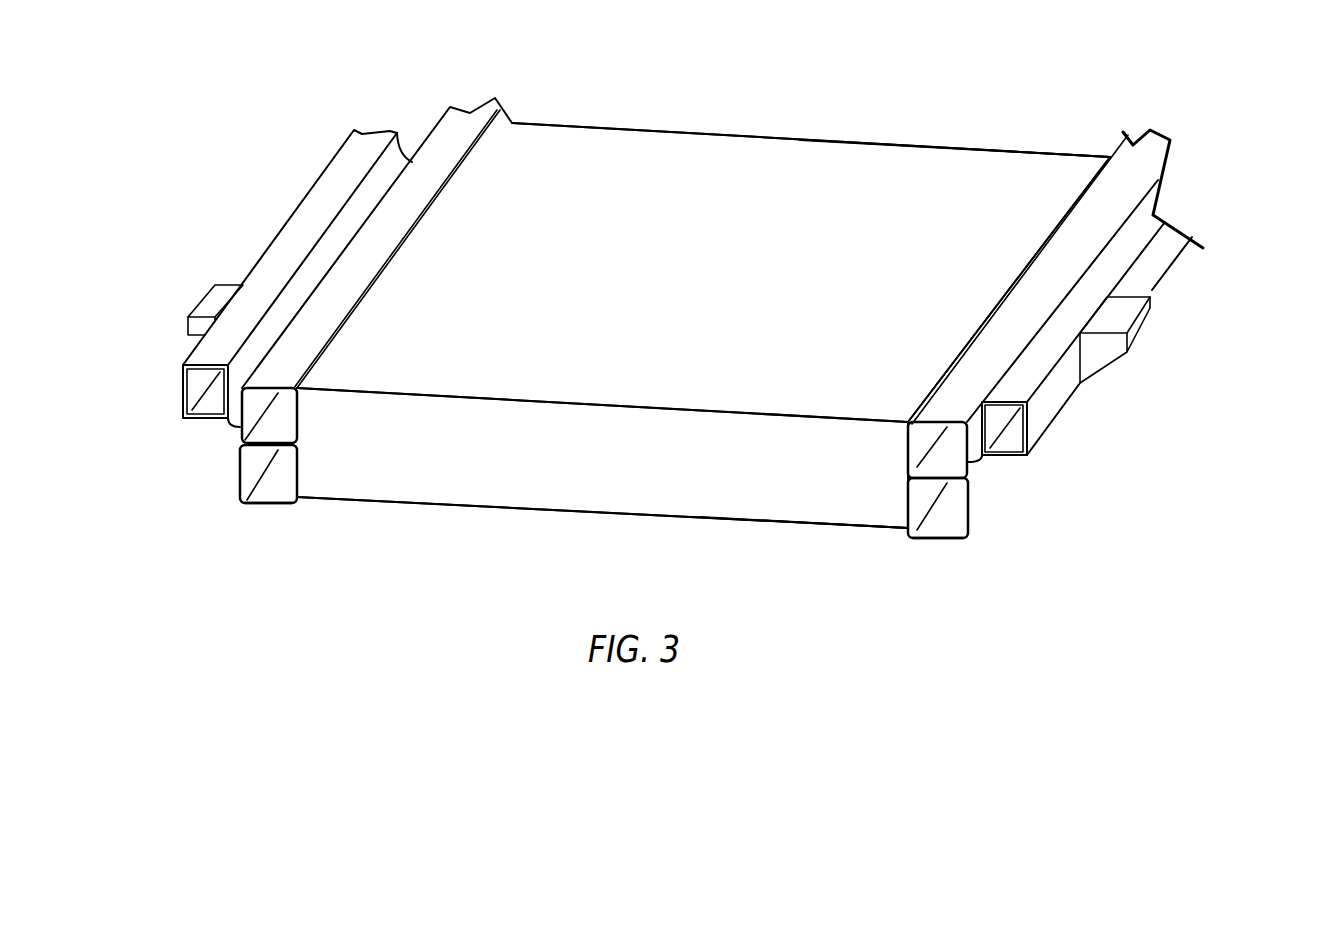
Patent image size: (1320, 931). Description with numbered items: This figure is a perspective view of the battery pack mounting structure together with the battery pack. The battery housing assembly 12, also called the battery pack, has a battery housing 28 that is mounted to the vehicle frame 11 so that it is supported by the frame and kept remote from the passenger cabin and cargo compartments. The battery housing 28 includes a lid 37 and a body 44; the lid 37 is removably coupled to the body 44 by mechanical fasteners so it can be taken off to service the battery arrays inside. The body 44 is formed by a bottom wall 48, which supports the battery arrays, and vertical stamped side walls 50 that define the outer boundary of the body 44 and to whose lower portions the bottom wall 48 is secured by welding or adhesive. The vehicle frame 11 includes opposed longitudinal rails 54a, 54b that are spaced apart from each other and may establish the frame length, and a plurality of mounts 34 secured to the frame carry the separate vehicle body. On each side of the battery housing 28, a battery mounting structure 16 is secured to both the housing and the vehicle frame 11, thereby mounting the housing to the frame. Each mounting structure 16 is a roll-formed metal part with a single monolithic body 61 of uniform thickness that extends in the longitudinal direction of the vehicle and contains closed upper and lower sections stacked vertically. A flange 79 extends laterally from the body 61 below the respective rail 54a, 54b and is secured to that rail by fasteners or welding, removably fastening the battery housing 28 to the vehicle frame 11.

The vehicle frame 11 is at (1138, 206).
The battery housing assembly 12 is at (724, 122).
The battery mounting structure 16 is at (264, 505).
The battery housing 28 is at (611, 128).
The mount 34 is at (202, 298).
The lid 37 is at (930, 185).
The body 44 is at (512, 464).
The bottom wall 48 is at (863, 535).
The side wall 50 is at (782, 462).
The longitudinal rail 54a is at (308, 195).
The longitudinal rail 54b is at (1068, 406).
The monolithic body 61 is at (283, 505).
The flange 79 is at (177, 415).